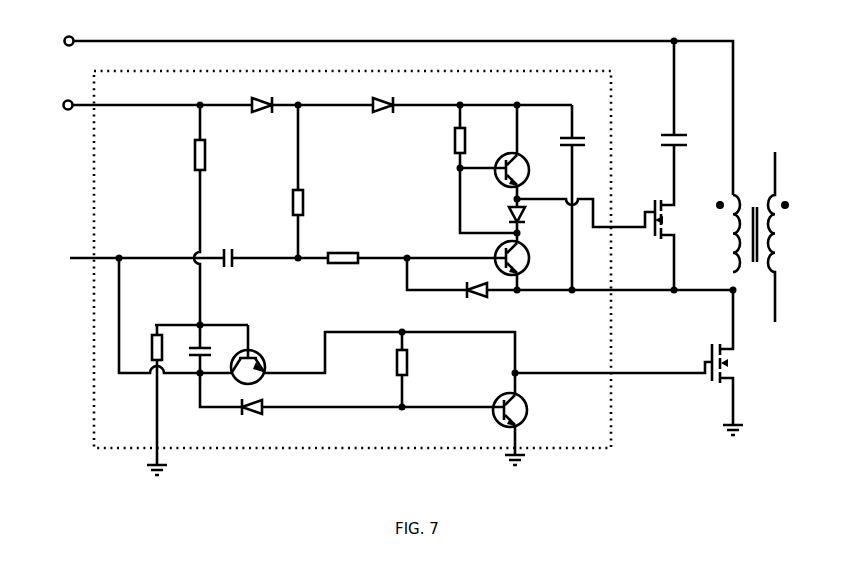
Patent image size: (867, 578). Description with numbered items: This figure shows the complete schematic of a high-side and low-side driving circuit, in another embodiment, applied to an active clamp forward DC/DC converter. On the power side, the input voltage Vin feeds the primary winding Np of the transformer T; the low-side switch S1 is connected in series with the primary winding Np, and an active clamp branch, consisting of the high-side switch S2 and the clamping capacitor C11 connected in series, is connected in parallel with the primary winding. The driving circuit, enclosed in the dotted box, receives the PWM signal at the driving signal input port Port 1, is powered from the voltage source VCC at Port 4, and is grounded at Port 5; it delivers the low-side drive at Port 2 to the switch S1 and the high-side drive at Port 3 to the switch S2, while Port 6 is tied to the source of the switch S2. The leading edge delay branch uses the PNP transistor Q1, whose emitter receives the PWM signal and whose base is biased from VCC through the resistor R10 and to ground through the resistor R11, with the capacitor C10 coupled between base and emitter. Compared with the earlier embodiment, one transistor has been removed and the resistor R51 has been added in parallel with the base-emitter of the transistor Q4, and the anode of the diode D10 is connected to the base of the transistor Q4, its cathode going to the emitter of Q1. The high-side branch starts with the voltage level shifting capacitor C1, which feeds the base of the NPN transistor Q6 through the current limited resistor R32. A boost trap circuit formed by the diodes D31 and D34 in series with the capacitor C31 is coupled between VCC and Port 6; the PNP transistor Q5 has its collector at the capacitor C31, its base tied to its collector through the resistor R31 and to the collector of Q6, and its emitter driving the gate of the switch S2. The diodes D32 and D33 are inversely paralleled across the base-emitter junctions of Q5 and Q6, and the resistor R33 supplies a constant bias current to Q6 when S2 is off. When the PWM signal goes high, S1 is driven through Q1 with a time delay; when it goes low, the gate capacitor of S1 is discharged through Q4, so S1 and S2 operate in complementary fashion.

The input voltage terminal Vin is at (381, 116).
The voltage source VCC is at (295, 114).
The PWM signal PWM is at (263, 248).
The driving signal input port Port 1 is at (80, 268).
The low side driving output port Port 2 is at (652, 377).
The high side driving output port Port 3 is at (618, 226).
The voltage source port Port 4 is at (80, 117).
The ground port Port 5 is at (150, 409).
The buffer B circuit port Port 6 is at (643, 293).
The resistor R10 is at (176, 215).
The resistor R11 is at (147, 392).
The resistor R31 is at (467, 171).
The current limited resistor R32 is at (341, 271).
The resistor R33 is at (316, 181).
The resistor R51 is at (420, 369).
The voltage level shifting capacitor C1 is at (230, 248).
The capacitor C10 is at (184, 353).
The clamping capacitor C11 is at (689, 95).
The capacitor C31 is at (583, 197).
The diode D10 is at (346, 407).
The boost trap diode D31 is at (255, 117).
The diode D32 is at (496, 223).
The diode D33 is at (572, 292).
The boost trap diode D34 is at (379, 119).
The PNP transistor Q1 is at (260, 354).
The transistor Q4 is at (526, 429).
The PNP transistor Q5 is at (522, 156).
The NPN transistor Q6 is at (523, 265).
The low-side switch S1 is at (707, 362).
The high-side switch S2 is at (595, 217).
The transformer T is at (752, 237).
The primary winding Np is at (717, 253).